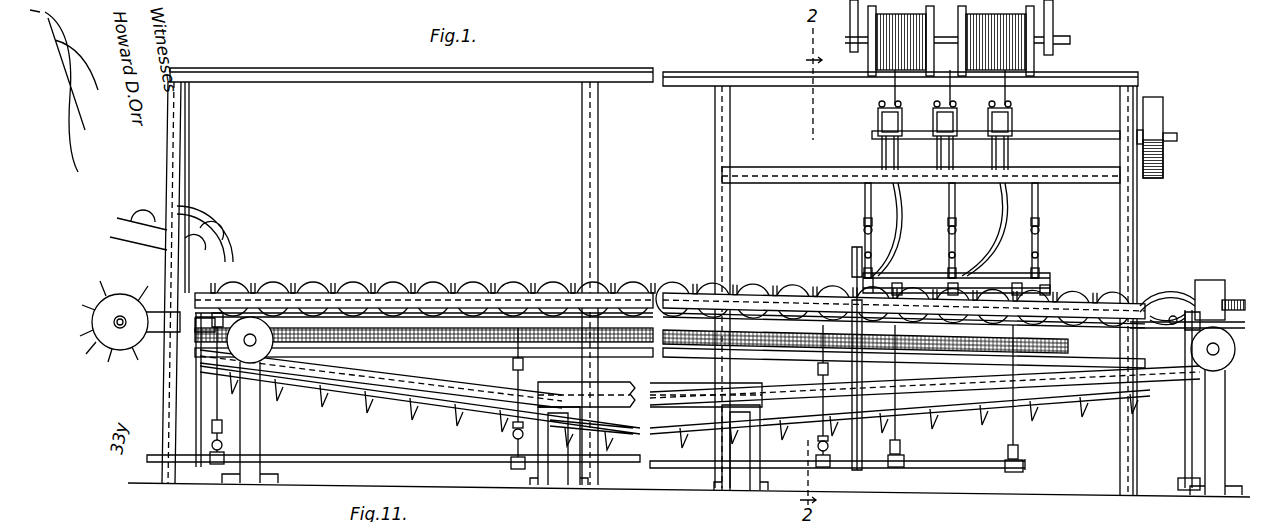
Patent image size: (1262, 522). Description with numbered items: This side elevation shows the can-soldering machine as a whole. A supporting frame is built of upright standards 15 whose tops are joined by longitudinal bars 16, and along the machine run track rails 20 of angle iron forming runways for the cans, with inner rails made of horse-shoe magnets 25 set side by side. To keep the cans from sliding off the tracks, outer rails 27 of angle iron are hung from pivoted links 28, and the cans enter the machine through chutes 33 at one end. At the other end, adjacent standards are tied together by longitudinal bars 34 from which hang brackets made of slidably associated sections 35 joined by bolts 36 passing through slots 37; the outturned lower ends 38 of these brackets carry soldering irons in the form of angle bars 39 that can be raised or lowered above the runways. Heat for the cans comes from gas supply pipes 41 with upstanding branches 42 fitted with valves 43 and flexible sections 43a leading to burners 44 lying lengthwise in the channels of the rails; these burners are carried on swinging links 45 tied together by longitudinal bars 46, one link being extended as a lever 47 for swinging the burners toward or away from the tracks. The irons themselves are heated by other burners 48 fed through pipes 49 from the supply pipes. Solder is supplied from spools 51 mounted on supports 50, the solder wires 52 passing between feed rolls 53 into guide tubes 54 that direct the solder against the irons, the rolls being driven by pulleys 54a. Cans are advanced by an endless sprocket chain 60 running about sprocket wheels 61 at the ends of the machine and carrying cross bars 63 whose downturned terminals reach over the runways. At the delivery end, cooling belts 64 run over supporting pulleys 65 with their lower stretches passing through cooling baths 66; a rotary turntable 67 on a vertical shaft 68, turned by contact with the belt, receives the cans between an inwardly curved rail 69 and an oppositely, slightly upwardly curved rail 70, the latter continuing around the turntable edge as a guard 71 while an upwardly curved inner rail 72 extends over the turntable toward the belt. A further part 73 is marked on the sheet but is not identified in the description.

In FIG. 1, the standards 15 is at (582, 163).
In FIG. 1, the longitudinal bars 16 is at (461, 83).
In FIG. 1, the track rails 20 is at (422, 300).
In FIG. 1, the horse-shoe magnets 25 is at (465, 350).
In FIG. 1, the rails 27 is at (352, 297).
In FIG. 1, the links 28 is at (190, 147).
In FIG. 1, the chutes 33 is at (216, 234).
In FIG. 1, the longitudinal bars 34 is at (790, 163).
In FIG. 1, the bracket sections 35 is at (862, 203).
In FIG. 1, the bolts 36 is at (865, 233).
In FIG. 1, the slots 37 is at (865, 223).
In FIG. 1, the outturned lower ends 38 is at (876, 278).
In FIG. 1, the soldering irons 39 is at (990, 282).
In FIG. 1, the gas supply pipes 41 is at (368, 456).
In FIG. 1, the upstanding branches 42 is at (223, 441).
In FIG. 1, the valves 43 is at (224, 457).
In FIG. 1, the flexible sections 43a is at (224, 422).
In FIG. 1, the burners 44 is at (202, 318).
In FIG. 1, the swinging links 45 is at (195, 396).
In FIG. 1, the longitudinal bars 46 is at (672, 351).
In FIG. 1, the lever 47 is at (852, 262).
In FIG. 1, the burners 48 is at (1043, 287).
In FIG. 1, the pipes 49 is at (905, 446).
In FIG. 1, the supports 50 is at (1058, 16).
In FIG. 1, the spools 51 is at (925, 30).
In FIG. 1, the wires 52 is at (948, 105).
In FIG. 1, the feed rolls 53 is at (878, 132).
In FIG. 1, the guide tubes 54 is at (898, 213).
In FIG. 1, the pulleys 54a is at (1163, 116).
In FIG. 1, the sprocket chain 60 is at (430, 418).
In FIG. 1, the sprocket wheels 61 is at (108, 336).
In FIG. 1, the cross bars 63 is at (507, 290).
In FIG. 1, the cooling belts 64 is at (346, 378).
In FIG. 1, the supporting pulleys 65 is at (258, 332).
In FIG. 1, the cooling baths 66 is at (607, 392).
In FIG. 1, the rotary turntable 67 is at (1225, 292).
In FIG. 1, the vertical shaft 68 is at (1185, 447).
In FIG. 1, the inwardly curved rail 69 is at (1173, 322).
In FIG. 1, the oppositely curved rail 70 is at (1168, 290).
In FIG. 1, the guard 71 is at (1242, 295).
In FIG. 1, the inner rail 72 is at (1185, 300).
In FIG. 11, the part of Fig. 11 73 is at (539, 513).